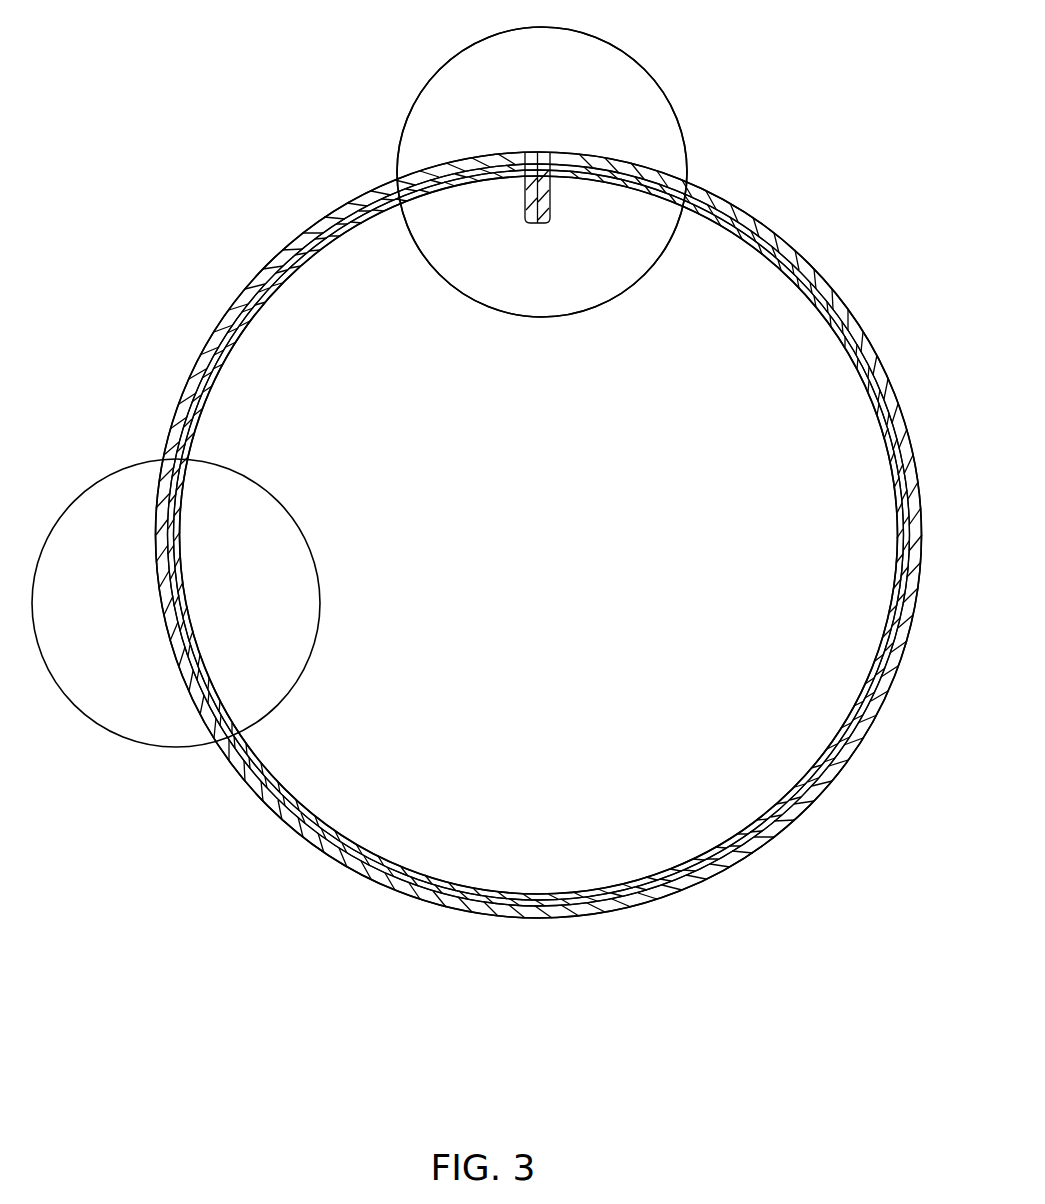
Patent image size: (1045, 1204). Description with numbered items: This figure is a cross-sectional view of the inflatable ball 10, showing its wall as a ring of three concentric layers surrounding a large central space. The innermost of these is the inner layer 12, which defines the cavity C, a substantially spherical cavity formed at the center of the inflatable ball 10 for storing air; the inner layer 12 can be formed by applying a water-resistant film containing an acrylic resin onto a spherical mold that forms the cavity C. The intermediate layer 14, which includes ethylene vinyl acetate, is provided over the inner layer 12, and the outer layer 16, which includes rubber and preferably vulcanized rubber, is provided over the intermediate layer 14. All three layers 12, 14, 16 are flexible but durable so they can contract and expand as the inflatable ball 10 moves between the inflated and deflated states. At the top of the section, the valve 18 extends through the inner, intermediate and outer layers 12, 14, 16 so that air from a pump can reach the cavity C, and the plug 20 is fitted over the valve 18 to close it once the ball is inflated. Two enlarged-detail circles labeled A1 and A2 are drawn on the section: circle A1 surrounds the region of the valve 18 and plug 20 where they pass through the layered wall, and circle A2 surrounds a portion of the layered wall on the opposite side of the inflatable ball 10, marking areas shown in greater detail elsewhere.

The inflatable ball 10 is at (772, 130).
The inner layer 12 is at (880, 412).
The intermediate layer 14 is at (825, 287).
The outer layer 16 is at (870, 338).
The valve 18 is at (590, 288).
The plug 20 is at (540, 152).
The detail area A1 is at (440, 65).
The detail area A2 is at (287, 500).
The cavity C is at (307, 318).